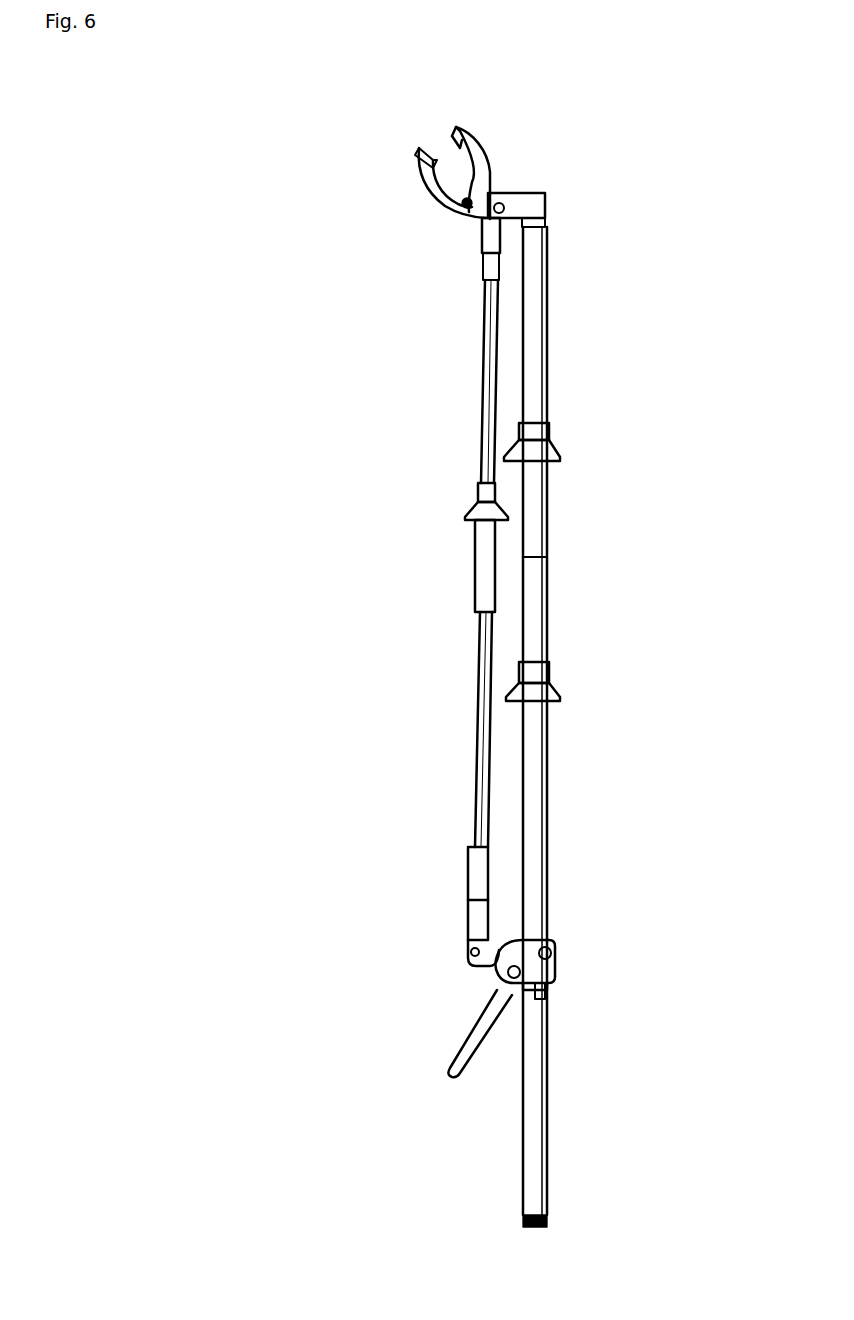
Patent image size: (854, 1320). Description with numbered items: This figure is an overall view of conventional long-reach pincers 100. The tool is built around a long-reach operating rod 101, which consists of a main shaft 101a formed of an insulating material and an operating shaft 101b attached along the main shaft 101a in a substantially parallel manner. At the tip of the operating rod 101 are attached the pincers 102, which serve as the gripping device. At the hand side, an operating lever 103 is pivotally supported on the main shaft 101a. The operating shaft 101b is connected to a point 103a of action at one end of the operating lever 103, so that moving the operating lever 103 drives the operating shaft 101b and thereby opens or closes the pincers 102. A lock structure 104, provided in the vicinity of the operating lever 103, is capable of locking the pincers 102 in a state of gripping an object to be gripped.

The long-reach pincers 100 is at (583, 589).
The long-reach operating rod 101 is at (207, 380).
The main shaft 101a is at (530, 361).
The operating shaft 101b is at (475, 603).
The pincers 102 is at (422, 190).
The operating lever 103 is at (477, 1022).
The point of action 103a is at (445, 947).
The lock structure 104 is at (582, 954).